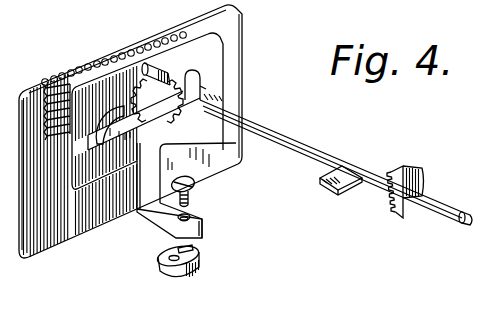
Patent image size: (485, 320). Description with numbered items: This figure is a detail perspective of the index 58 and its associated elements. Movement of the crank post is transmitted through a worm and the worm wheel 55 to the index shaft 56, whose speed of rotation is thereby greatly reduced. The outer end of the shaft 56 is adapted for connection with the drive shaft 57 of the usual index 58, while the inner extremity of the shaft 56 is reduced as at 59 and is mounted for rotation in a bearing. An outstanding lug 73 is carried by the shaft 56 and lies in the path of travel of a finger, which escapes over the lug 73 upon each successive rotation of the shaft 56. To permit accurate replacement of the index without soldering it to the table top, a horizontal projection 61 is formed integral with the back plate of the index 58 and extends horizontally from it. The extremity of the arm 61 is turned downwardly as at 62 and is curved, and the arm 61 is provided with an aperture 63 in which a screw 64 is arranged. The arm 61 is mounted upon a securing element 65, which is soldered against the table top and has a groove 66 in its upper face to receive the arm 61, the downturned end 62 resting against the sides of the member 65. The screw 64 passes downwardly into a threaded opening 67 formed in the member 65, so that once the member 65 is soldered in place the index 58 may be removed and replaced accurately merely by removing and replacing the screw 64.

The worm wheel 55 is at (404, 170).
The index shaft 56 is at (320, 149).
The drive shaft 57 is at (155, 65).
The index 58 is at (40, 96).
The reduced extremity 59 is at (459, 224).
The horizontal projection 61 is at (157, 218).
The downturned end 62 is at (201, 229).
The aperture 63 is at (199, 214).
The screw 64 is at (196, 187).
The securing element 65 is at (168, 280).
The groove 66 is at (194, 248).
The threaded opening 67 is at (160, 250).
The lug 73 is at (340, 185).